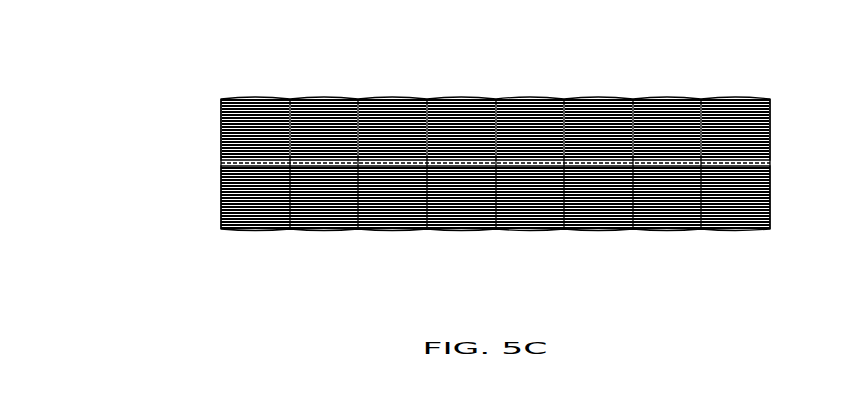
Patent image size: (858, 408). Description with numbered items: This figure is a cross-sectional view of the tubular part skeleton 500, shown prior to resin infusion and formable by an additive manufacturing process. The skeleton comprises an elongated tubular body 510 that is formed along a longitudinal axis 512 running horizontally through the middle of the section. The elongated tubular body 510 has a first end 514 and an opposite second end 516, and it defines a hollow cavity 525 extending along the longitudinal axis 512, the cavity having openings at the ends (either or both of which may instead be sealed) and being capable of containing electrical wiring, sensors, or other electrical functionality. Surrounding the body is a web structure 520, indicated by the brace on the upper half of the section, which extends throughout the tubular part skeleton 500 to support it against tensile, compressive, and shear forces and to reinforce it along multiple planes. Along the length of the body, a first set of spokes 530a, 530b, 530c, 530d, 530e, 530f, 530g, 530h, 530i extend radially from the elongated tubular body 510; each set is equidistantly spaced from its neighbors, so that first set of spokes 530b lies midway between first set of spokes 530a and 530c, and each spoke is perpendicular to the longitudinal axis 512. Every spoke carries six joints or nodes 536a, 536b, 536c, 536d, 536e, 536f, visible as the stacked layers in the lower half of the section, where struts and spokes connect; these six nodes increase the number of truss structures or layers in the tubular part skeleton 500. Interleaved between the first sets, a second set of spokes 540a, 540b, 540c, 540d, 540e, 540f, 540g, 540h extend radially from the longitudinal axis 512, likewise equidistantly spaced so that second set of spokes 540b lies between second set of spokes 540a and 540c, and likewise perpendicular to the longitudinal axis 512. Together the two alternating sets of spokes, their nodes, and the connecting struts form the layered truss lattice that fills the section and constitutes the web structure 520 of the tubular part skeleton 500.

The tubular part skeleton 500 is at (160, 68).
The elongated tubular body 510 is at (757, 48).
The longitudinal axis 512 is at (206, 153).
The first end 514 is at (213, 93).
The second end 516 is at (763, 207).
The web structure 520 is at (763, 92).
The hollow cavity 525 is at (212, 151).
The first set of spokes 530a is at (213, 222).
The first set of spokes 530b is at (282, 222).
The first set of spokes 530c is at (350, 222).
The first set of spokes 530d is at (419, 222).
The first set of spokes 530e is at (488, 222).
The first set of spokes 530f is at (556, 222).
The first set of spokes 530g is at (625, 222).
The first set of spokes 530h is at (693, 222).
The first set of spokes 530i is at (762, 222).
The node 536a is at (213, 166).
The node 536b is at (213, 175).
The node 536c is at (213, 184).
The node 536d is at (213, 193).
The node 536e is at (213, 205).
The node 536f is at (213, 216).
The second set of spokes 540a is at (248, 90).
The second set of spokes 540b is at (317, 90).
The second set of spokes 540c is at (385, 90).
The second set of spokes 540d is at (453, 90).
The second set of spokes 540e is at (522, 90).
The second set of spokes 540f is at (590, 90).
The second set of spokes 540g is at (659, 90).
The second set of spokes 540h is at (728, 90).